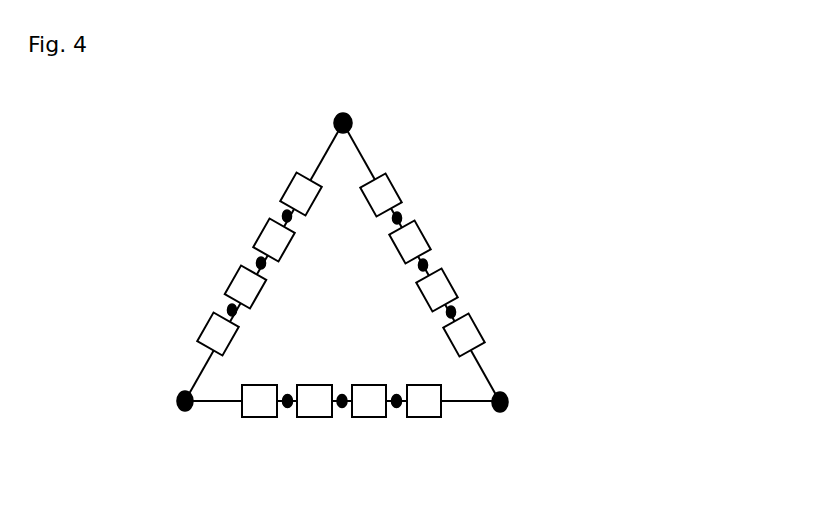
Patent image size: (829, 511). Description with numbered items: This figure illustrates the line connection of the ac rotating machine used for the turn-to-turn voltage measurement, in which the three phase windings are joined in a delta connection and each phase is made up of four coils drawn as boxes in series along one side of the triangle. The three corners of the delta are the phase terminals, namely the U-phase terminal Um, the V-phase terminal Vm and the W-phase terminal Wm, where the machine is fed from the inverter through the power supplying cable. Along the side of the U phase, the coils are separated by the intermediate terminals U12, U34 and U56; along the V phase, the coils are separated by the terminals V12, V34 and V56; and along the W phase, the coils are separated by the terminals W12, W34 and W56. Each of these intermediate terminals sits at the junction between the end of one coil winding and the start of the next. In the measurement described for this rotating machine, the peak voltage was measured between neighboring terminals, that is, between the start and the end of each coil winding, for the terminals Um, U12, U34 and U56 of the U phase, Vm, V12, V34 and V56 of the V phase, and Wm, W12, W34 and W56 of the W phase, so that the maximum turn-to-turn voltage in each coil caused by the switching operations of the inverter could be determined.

The W-phase terminal Wm is at (351, 123).
The U-phase terminal Um is at (178, 400).
The V-phase terminal Vm is at (508, 398).
The U-phase terminal U12 is at (228, 310).
The U-phase terminal U34 is at (257, 262).
The U-phase terminal U56 is at (283, 214).
The V-phase terminal V12 is at (398, 408).
The V-phase terminal V34 is at (343, 408).
The V-phase terminal V56 is at (290, 408).
The W-phase terminal W12 is at (402, 215).
The W-phase terminal W34 is at (428, 258).
The W-phase terminal W56 is at (456, 308).